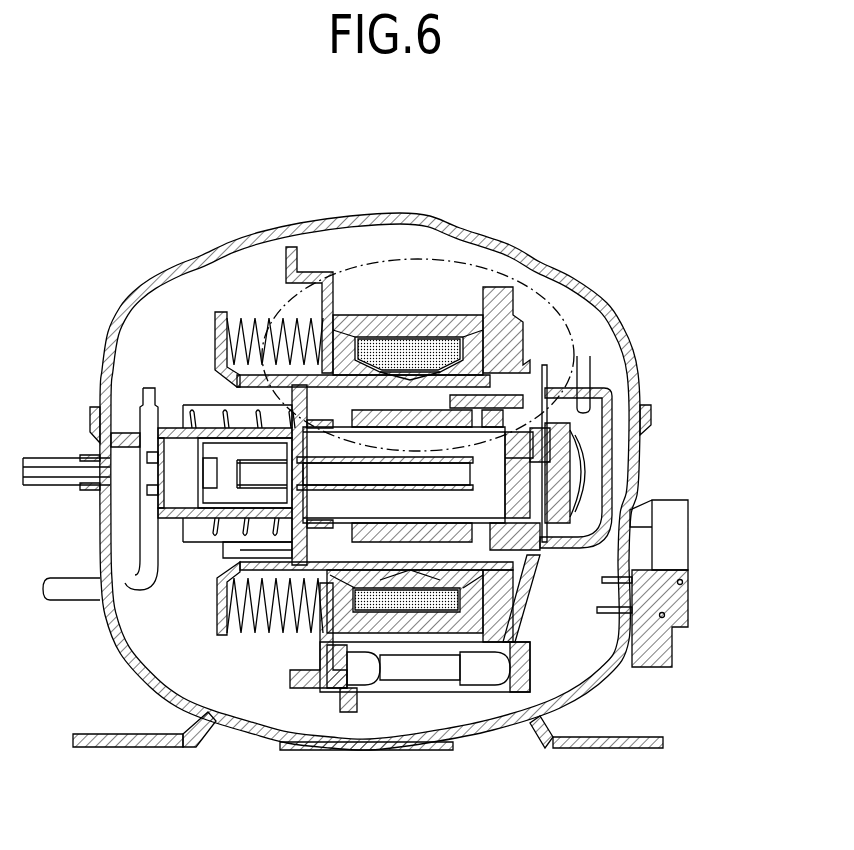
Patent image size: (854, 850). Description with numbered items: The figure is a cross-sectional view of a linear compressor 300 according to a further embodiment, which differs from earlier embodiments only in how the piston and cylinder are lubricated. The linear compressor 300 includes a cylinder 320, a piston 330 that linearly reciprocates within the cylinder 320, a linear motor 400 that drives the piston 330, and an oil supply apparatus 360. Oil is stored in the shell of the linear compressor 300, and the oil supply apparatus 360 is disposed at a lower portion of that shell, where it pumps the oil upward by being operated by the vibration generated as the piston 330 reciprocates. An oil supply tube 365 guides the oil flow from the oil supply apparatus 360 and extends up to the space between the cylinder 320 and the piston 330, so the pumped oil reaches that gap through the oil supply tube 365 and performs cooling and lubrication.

The linear compressor 300 is at (462, 195).
The linear motor 400 is at (381, 285).
The cylinder 320 is at (560, 429).
The piston 330 is at (567, 440).
The oil supply tube 365 is at (520, 608).
The oil supply apparatus 360 is at (468, 708).